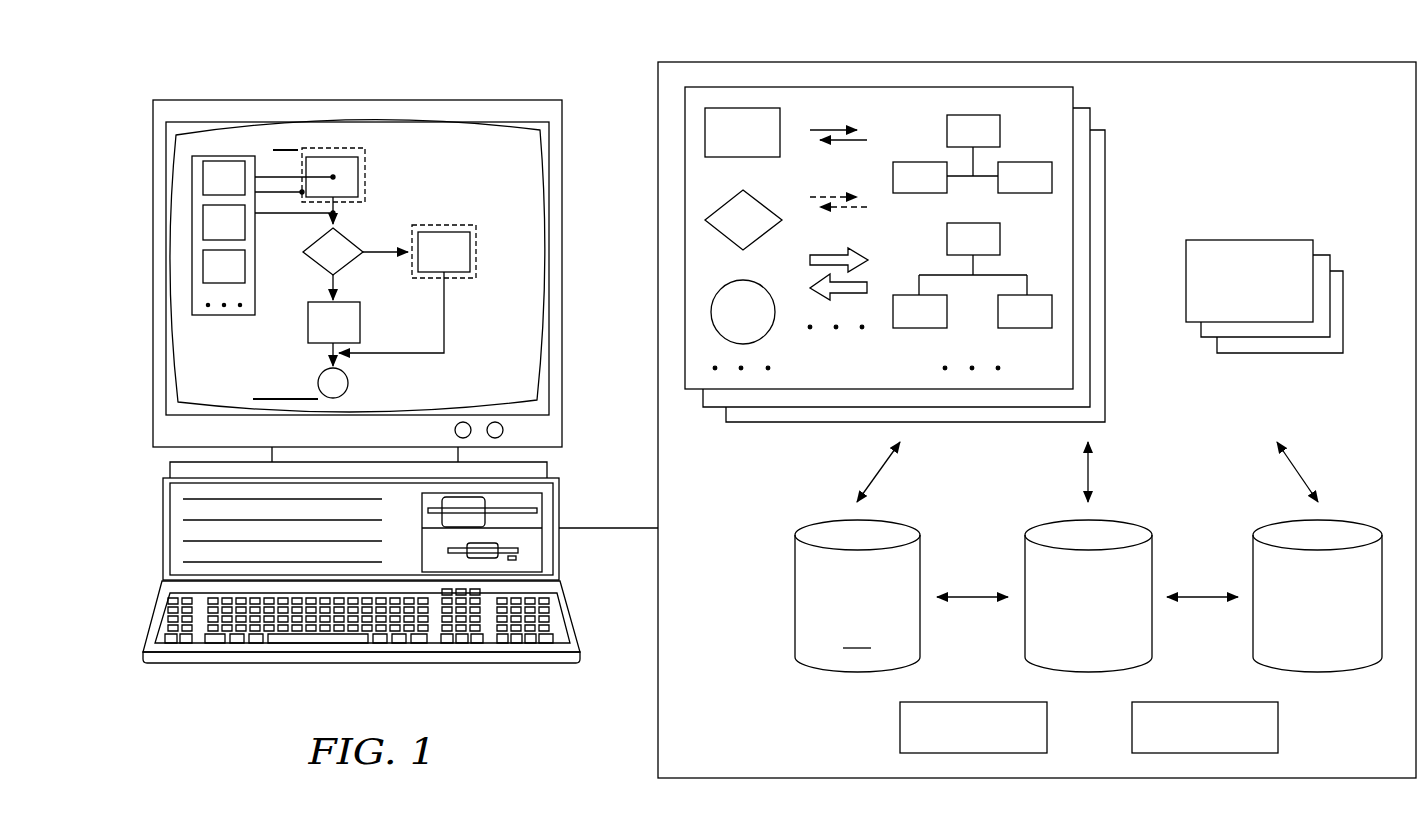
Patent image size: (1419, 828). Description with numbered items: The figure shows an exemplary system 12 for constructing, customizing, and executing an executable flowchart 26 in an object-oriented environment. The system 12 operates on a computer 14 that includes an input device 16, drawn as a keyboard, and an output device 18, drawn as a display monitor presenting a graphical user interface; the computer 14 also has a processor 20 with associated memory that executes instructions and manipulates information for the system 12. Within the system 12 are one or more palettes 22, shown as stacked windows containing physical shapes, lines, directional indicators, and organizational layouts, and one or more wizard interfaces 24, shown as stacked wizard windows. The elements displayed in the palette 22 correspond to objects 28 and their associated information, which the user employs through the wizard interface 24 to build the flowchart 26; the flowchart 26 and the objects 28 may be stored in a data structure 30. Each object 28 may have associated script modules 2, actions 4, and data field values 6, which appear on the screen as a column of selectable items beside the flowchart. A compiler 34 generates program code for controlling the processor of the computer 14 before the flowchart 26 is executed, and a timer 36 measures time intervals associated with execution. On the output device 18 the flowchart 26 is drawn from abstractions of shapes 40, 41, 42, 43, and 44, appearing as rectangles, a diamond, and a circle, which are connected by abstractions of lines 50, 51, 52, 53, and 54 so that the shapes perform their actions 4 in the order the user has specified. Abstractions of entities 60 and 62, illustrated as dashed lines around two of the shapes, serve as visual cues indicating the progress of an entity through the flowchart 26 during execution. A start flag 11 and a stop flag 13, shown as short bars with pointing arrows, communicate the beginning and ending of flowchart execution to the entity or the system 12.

The script module 2 is at (218, 190).
The action 4 is at (218, 235).
The data field value 6 is at (218, 279).
The start flag 11 is at (283, 138).
The system 12 is at (1335, 128).
The stop flag 13 is at (266, 392).
The computer 14 is at (181, 76).
The input device 16 is at (212, 663).
The output device 18 is at (177, 258).
The processor 20 is at (162, 512).
The palette 22 is at (1073, 96).
The wizard interface 24 is at (1290, 240).
The executable flowchart 26 is at (455, 182).
The object 28 is at (1303, 648).
The data structure 30 is at (1074, 648).
The compiler 34 is at (1132, 726).
The timer 36 is at (900, 726).
The shape 40 is at (352, 165).
The shape 41 is at (321, 264).
The shape 42 is at (432, 264).
The shape 43 is at (322, 335).
The shape 44 is at (348, 383).
The line 50 is at (337, 210).
The line 51 is at (375, 253).
The line 52 is at (330, 279).
The line 53 is at (444, 328).
The line 54 is at (330, 350).
The entity 60 is at (366, 182).
The entity 62 is at (477, 254).